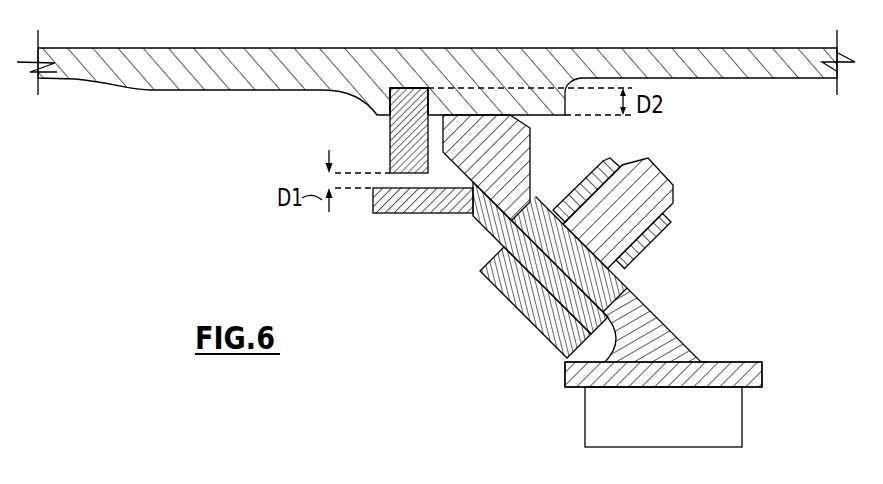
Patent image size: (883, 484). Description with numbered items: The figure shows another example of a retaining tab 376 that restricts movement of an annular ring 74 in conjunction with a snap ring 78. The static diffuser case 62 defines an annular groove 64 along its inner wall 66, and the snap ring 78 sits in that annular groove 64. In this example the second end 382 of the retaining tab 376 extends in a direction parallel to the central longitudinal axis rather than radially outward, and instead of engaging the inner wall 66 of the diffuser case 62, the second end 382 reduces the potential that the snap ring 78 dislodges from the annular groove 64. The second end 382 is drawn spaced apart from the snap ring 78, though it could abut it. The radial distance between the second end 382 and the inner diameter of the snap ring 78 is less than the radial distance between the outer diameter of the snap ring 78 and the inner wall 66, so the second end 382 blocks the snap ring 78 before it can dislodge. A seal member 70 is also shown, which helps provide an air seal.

The diffuser case 62 is at (181, 53).
The annular groove 64 is at (433, 84).
The inner wall 66 is at (433, 124).
The seal member 70 is at (738, 427).
The annular ring 74 is at (652, 303).
The snap ring 78 is at (391, 134).
The retaining tab 376 is at (497, 228).
The second end 382 is at (398, 214).